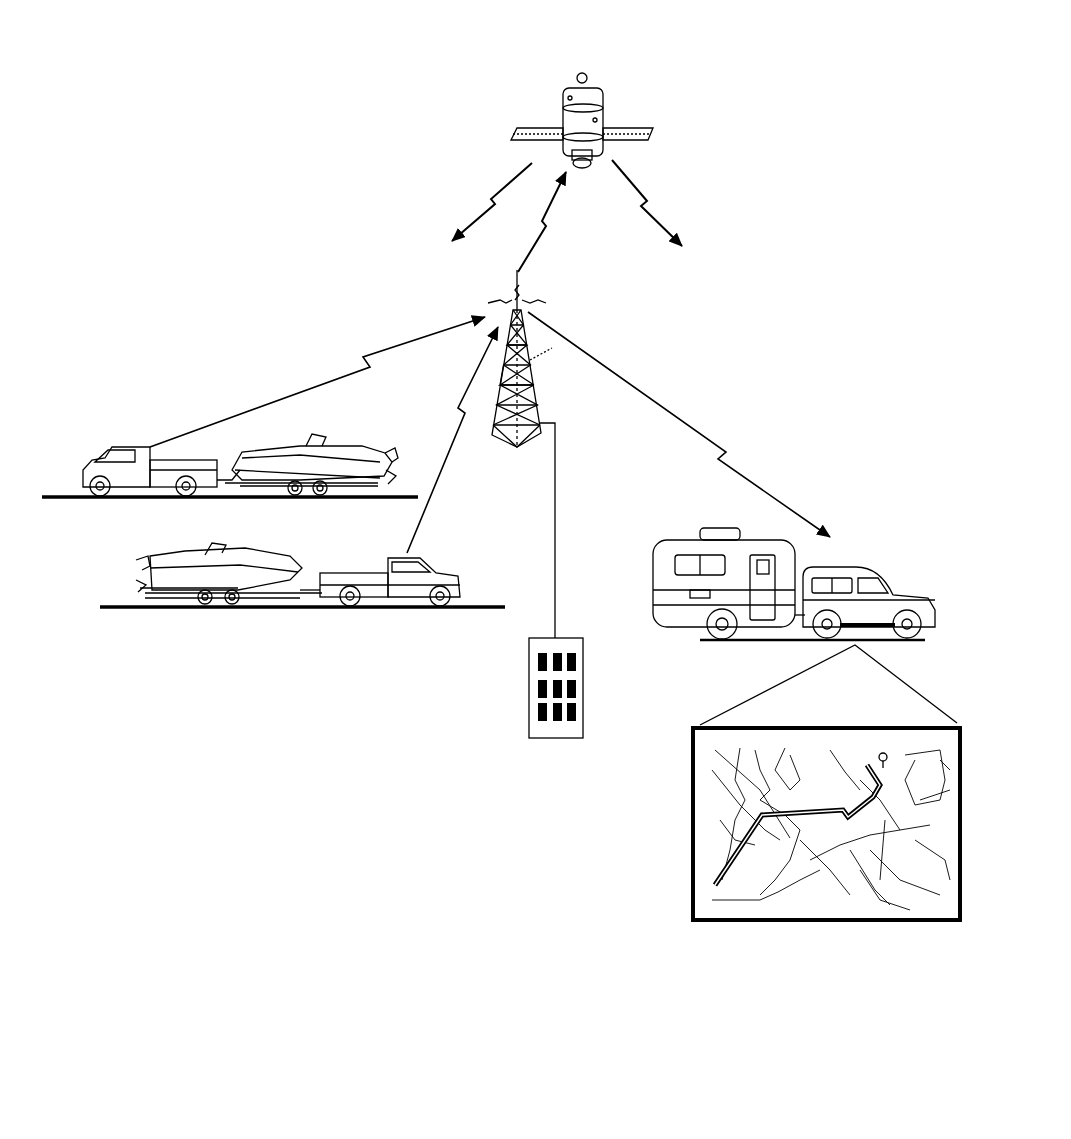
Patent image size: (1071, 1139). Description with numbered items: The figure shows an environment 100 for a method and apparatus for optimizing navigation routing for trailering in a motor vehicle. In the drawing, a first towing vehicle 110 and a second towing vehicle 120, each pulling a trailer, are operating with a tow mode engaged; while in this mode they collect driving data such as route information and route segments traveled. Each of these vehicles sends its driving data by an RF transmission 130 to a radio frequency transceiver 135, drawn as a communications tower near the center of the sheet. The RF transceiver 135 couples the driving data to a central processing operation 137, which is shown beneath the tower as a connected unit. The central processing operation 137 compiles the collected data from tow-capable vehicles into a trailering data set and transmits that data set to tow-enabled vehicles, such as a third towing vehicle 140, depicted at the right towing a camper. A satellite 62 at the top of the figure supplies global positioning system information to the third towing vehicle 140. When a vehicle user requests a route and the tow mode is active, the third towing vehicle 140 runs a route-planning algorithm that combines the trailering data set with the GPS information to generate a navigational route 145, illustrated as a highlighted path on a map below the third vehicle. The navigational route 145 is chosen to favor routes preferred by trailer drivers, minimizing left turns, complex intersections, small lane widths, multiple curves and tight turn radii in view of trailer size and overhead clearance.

The environment for optimizing navigation routing for trailering 100 is at (534, 31).
The satellite 62 is at (603, 97).
The first towing vehicle 110 is at (258, 628).
The second towing vehicle 120 is at (135, 424).
The RF transmission 130 is at (443, 435).
The radio frequency (RF) transceiver 135 is at (541, 386).
The central processing operation 137 is at (517, 708).
The third towing vehicle 140 is at (880, 548).
The navigational route 145 is at (678, 821).